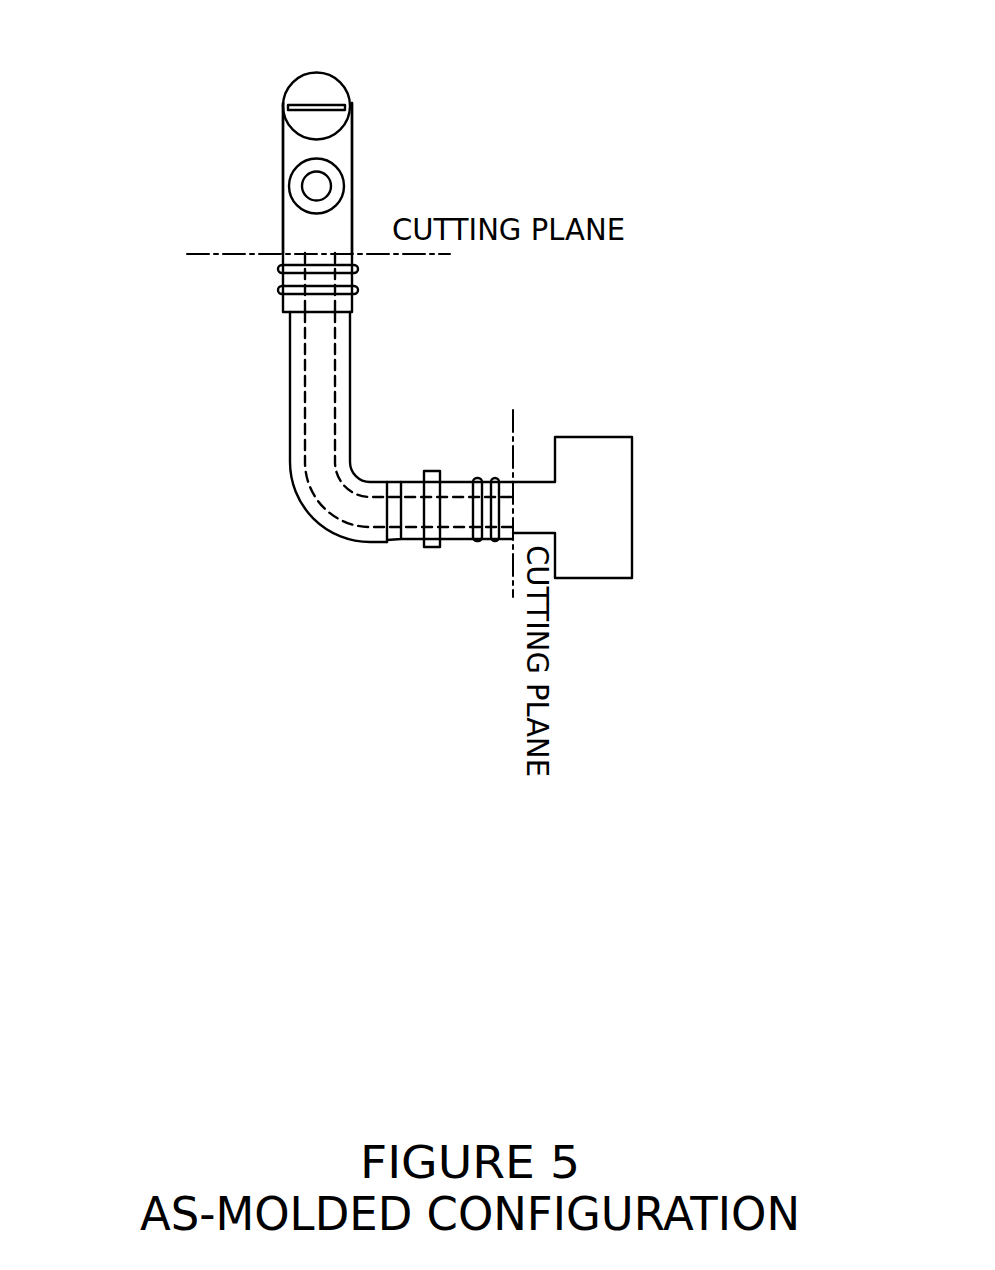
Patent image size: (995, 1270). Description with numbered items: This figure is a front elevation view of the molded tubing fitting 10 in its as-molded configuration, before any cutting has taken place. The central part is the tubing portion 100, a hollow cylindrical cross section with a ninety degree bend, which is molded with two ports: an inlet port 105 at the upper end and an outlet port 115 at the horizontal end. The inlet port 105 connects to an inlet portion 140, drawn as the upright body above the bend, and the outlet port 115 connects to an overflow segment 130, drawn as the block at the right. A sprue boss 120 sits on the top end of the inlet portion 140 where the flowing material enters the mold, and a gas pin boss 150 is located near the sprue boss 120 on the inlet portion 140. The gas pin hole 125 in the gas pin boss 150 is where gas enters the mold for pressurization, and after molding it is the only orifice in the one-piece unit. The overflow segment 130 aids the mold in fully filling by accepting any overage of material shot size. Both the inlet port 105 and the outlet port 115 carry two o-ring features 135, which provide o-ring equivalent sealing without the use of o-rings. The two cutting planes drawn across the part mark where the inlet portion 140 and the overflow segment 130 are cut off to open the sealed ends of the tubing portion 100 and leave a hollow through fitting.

The molded tubing fitting 10 is at (402, 433).
The tubing portion 100 is at (335, 461).
The inlet port 105 is at (392, 302).
The outlet port 115 is at (548, 433).
The sprue boss 120 is at (216, 70).
The gas pin hole 125 is at (408, 163).
The overflow segment 130 is at (647, 480).
The o-ring features 135 is at (417, 572).
The inlet portion 140 is at (410, 145).
The gas pin boss 150 is at (231, 166).